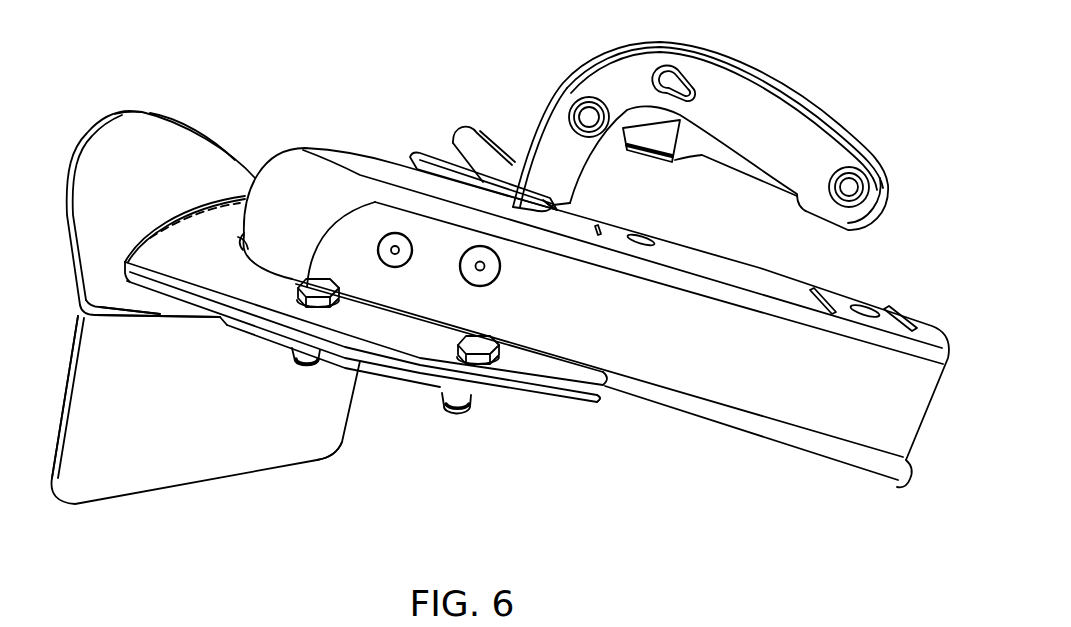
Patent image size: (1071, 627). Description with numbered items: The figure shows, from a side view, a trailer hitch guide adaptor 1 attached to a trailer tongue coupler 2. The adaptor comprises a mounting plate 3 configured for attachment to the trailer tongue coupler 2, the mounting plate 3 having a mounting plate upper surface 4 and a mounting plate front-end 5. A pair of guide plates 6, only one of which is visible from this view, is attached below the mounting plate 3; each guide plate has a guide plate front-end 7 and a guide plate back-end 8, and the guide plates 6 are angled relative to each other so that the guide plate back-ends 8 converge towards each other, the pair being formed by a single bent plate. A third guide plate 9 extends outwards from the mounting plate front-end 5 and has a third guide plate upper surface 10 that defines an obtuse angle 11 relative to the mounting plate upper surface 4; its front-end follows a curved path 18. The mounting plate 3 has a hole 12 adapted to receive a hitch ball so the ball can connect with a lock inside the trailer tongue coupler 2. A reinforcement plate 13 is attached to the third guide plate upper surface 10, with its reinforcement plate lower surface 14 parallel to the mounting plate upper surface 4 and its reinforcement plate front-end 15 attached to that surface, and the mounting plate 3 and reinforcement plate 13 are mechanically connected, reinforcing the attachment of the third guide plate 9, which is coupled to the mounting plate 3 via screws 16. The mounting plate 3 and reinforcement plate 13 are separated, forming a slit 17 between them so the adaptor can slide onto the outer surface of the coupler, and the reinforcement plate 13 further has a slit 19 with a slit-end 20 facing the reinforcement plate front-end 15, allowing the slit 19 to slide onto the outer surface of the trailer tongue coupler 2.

The trailer hitch guide adaptor 1 is at (383, 408).
The trailer tongue coupler 2 is at (412, 138).
The mounting plate 3 is at (548, 396).
The mounting plate upper surface 4 is at (609, 398).
The mounting plate front-end 5 is at (145, 297).
The guide plates 6 is at (149, 512).
The guide plate front-end 7 is at (44, 436).
The guide plate back-end 8 is at (307, 424).
The third guide plate 9 is at (191, 110).
The third guide plate upper surface 10 is at (188, 172).
The obtuse angle 11 is at (118, 293).
The hole 12 is at (619, 424).
The reinforcement plate 13 is at (537, 375).
The reinforcement plate lower surface 14 is at (528, 412).
The reinforcement plate front-end 15 is at (146, 219).
The screws 16 is at (297, 290).
The slit 17 is at (420, 383).
The curved path 18 is at (140, 110).
The slit 19 is at (574, 352).
The slit-end 20 is at (232, 220).